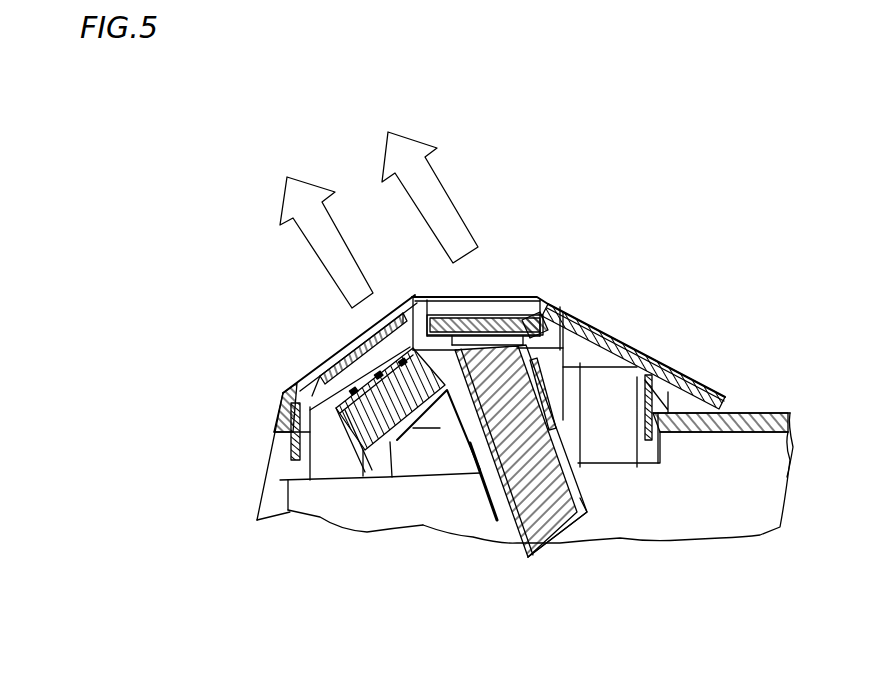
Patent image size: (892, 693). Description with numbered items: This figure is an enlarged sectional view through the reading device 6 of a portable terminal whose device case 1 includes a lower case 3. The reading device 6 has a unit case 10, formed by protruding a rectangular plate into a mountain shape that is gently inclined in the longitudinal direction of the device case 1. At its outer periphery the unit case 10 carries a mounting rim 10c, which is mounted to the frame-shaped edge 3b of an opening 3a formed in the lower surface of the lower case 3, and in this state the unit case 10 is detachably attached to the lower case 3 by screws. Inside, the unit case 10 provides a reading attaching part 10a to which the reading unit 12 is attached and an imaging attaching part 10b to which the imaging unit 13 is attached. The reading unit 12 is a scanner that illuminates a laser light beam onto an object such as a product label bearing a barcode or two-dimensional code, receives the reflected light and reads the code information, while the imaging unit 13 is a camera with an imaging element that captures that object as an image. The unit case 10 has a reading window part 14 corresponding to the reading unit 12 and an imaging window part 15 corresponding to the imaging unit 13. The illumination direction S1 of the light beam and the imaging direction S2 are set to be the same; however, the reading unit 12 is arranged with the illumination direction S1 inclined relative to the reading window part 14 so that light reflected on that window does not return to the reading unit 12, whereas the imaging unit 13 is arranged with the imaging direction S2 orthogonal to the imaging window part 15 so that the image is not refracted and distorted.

The device case 1 is at (732, 547).
The lower case 3 is at (753, 413).
The opening 3a is at (437, 480).
The frame-shaped edge 3b is at (323, 435).
The reading device 6 is at (561, 283).
The unit case 10 is at (526, 438).
The reading attaching part 10a is at (537, 545).
The imaging attaching part 10b is at (365, 445).
The mounting rim 10c is at (303, 428).
The reading unit 12 is at (522, 402).
The imaging unit 13 is at (367, 412).
The reading window part 14 is at (498, 318).
The imaging window part 15 is at (342, 350).
The illumination direction S1 is at (442, 207).
The imaging direction S2 is at (322, 248).